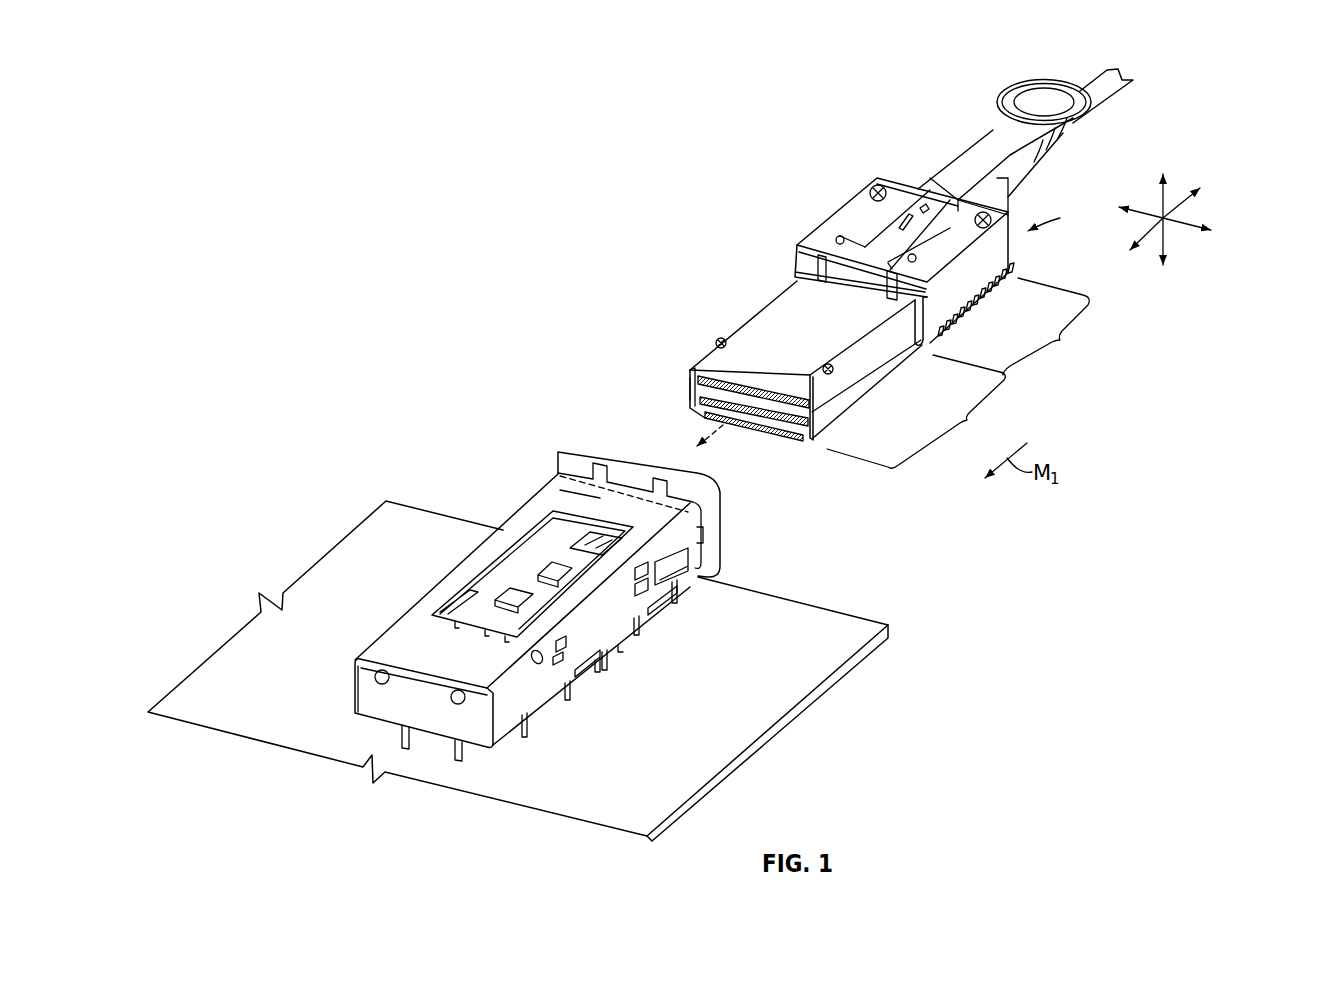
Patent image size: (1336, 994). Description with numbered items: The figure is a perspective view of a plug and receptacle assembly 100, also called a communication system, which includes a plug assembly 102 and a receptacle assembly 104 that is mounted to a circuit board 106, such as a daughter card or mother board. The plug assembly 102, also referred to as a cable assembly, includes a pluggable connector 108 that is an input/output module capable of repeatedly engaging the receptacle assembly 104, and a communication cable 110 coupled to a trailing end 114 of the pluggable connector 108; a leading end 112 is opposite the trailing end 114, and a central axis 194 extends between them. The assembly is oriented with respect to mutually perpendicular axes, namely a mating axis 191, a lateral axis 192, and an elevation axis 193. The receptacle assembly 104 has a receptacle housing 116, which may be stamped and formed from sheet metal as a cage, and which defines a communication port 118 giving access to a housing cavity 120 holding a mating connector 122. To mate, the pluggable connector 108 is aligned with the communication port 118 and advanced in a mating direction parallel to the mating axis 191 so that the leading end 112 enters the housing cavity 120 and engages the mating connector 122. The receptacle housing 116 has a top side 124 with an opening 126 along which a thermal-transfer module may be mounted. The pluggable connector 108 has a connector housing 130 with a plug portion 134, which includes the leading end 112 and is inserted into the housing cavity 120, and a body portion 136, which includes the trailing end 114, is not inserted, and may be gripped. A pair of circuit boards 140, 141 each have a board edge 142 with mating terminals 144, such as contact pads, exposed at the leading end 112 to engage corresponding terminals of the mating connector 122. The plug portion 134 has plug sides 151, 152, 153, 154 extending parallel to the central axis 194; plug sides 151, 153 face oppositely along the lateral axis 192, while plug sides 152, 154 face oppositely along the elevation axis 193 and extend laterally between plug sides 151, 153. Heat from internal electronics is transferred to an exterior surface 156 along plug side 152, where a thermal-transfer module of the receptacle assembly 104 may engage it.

The plug and receptacle assembly 100 is at (497, 108).
The plug assembly 102 is at (848, 86).
The receptacle assembly 104 is at (498, 466).
The circuit board 106 is at (838, 630).
The pluggable connector 108 is at (782, 196).
The communication cable 110 is at (1097, 92).
The leading end 112 is at (683, 422).
The trailing end 114 is at (1067, 220).
The receptacle housing 116 is at (390, 648).
The communication port 118 is at (732, 515).
The housing cavity 120 is at (490, 580).
The mating connector 122 is at (445, 612).
The top side 124 is at (577, 478).
The opening 126 is at (523, 555).
The connector housing 130 is at (852, 215).
The plug portion 134 is at (917, 411).
The body portion 136 is at (1054, 326).
The circuit board 140 is at (696, 372).
The circuit board 141 is at (688, 404).
The board edge 142 is at (750, 400).
The mating terminals 144 is at (772, 392).
The plug side 151 is at (714, 328).
The plug side 152 is at (792, 294).
The plug side 153 is at (888, 346).
The plug side 154 is at (846, 425).
The exterior surface 156 is at (853, 323).
The mating axis 191 is at (1185, 195).
The lateral axis 192 is at (1197, 221).
The elevation axis 193 is at (1167, 237).
The central axis 194 is at (720, 434).